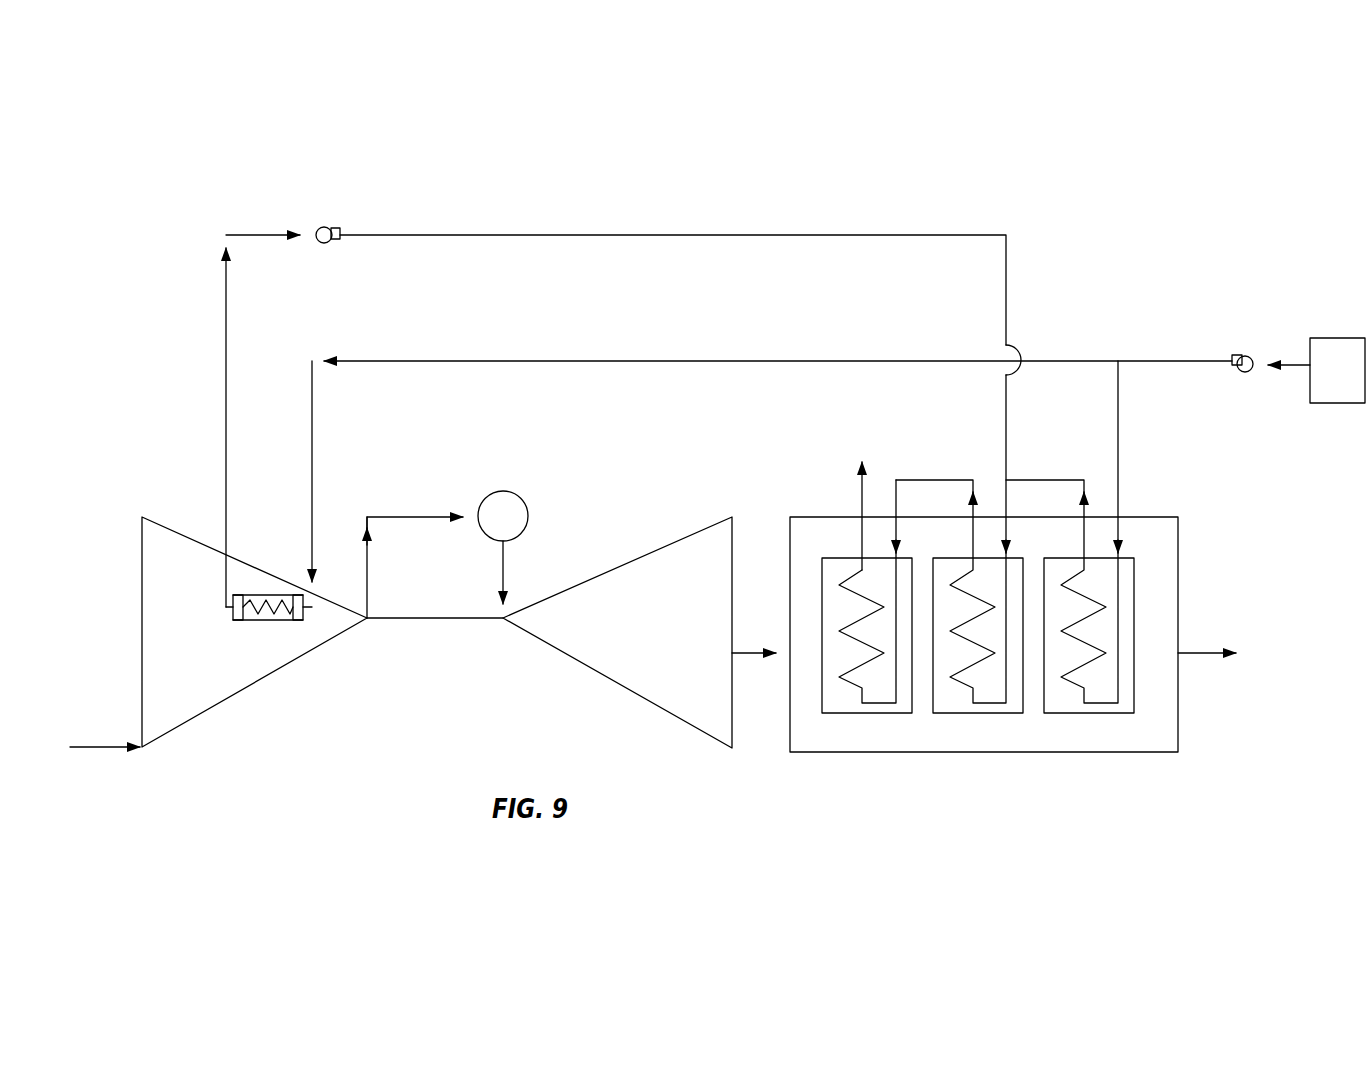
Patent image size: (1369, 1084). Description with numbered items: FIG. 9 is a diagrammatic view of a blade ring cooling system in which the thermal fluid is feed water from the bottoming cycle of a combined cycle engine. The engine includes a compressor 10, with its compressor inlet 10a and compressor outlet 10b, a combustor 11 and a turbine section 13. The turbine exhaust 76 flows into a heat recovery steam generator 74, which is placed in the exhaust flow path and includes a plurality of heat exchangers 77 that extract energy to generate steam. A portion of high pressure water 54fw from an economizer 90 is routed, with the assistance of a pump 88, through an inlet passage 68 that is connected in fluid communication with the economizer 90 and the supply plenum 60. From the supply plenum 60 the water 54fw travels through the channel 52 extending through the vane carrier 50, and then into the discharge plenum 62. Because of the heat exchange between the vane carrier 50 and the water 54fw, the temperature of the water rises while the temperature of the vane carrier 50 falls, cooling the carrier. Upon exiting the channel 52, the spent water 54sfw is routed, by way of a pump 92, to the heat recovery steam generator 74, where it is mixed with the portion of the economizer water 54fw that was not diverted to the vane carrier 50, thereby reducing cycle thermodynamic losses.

The compressor 10 is at (386, 676).
The compressor inlet 10a is at (140, 610).
The compressor outlet 10b is at (370, 623).
The combustor 11 is at (520, 508).
The turbine section 13 is at (660, 695).
The vane carrier 50 is at (255, 623).
The channel 52 is at (280, 620).
The high pressure water 54fw is at (826, 473).
The spent water 54sfw is at (226, 385).
The supply plenum 60 is at (280, 701).
The discharge plenum 62 is at (227, 612).
The inlet passage 68 is at (836, 372).
The heat recovery steam generator 74 is at (1003, 667).
The turbine exhaust 76 is at (755, 655).
The heat exchangers 77 is at (1083, 713).
The pump 88 is at (1240, 355).
The economizer 90 is at (1345, 403).
The pump 92 is at (324, 227).